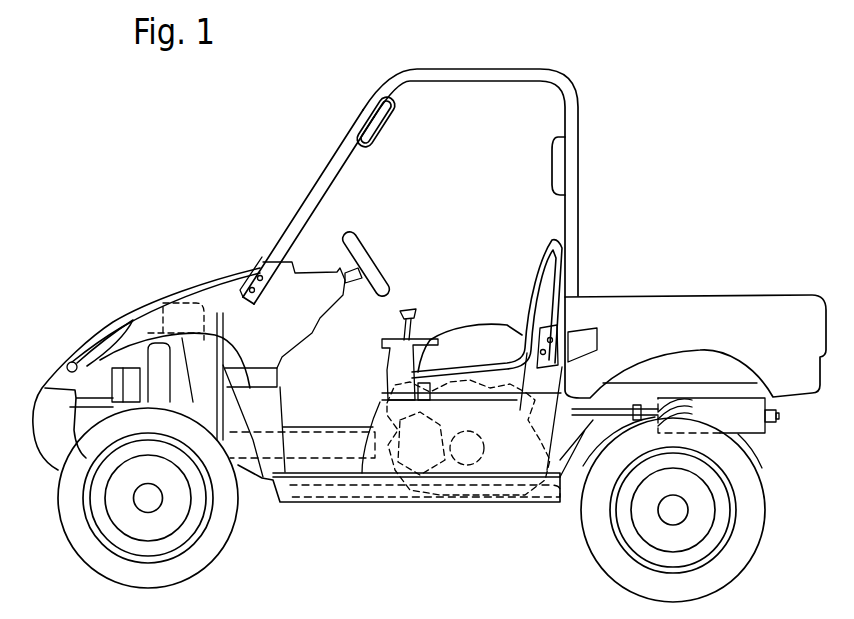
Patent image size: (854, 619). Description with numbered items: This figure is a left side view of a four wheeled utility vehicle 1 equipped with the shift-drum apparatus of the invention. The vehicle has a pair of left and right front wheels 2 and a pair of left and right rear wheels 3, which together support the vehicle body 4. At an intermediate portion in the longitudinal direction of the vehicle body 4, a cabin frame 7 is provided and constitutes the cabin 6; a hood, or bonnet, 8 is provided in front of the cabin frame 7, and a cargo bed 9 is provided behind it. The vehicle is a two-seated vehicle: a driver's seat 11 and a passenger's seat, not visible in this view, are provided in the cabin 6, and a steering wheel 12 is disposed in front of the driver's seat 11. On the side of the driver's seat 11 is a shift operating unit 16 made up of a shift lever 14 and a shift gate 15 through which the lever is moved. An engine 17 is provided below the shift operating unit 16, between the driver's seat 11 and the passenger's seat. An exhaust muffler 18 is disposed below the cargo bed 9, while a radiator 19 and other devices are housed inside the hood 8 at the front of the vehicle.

The utility vehicle 1 is at (260, 188).
The front wheels 2 is at (87, 538).
The rear wheels 3 is at (753, 538).
The vehicle body 4 is at (336, 500).
The cabin 6 is at (412, 203).
The cabin frame 7 is at (337, 171).
The hood (bonnet) 8 is at (132, 313).
The cargo bed 9 is at (662, 322).
The driver's seat 11 is at (481, 332).
The steering wheel 12 is at (366, 258).
The shift lever 14 is at (412, 306).
The shift gate 15 is at (383, 338).
The shift operating unit 16 is at (430, 308).
The engine 17 is at (437, 472).
The exhaust muffler 18 is at (766, 424).
The radiator 19 is at (157, 375).